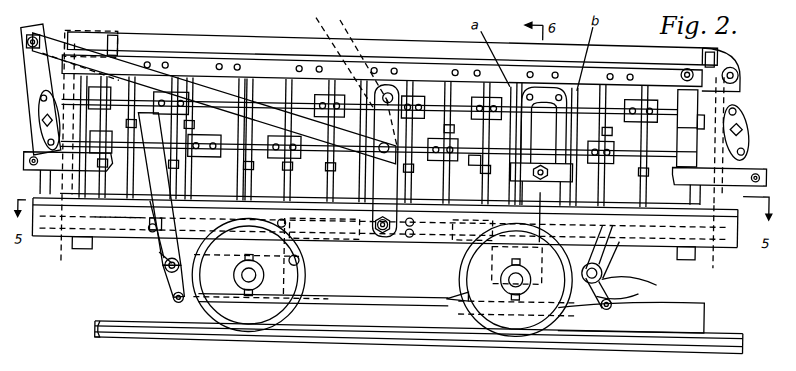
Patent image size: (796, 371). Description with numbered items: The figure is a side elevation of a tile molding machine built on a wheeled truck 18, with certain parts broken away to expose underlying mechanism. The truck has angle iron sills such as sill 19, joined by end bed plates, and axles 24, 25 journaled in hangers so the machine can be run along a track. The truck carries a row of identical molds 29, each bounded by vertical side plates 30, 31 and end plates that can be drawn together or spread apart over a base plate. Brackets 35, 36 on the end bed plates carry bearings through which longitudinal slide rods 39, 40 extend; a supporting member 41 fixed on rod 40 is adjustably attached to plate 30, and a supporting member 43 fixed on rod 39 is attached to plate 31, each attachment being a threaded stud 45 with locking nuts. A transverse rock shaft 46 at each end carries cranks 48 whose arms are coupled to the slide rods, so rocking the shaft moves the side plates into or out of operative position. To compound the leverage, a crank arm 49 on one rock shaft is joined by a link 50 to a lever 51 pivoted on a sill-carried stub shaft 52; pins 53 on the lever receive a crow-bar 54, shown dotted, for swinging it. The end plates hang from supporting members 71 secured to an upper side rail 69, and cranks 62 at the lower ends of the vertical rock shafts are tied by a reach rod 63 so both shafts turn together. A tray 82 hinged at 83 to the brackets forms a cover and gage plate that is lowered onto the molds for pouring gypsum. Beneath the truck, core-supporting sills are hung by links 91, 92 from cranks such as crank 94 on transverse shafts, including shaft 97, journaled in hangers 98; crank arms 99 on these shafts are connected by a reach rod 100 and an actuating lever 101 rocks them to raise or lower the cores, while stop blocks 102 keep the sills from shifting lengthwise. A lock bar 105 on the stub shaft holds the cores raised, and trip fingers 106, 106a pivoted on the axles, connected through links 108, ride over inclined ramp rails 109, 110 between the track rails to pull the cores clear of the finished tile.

The truck 18 is at (152, 37).
The angle iron sill 19 is at (107, 233).
The axle 24 is at (257, 290).
The axle 25 is at (523, 287).
The mold 29 is at (233, 91).
The vertical side plate 30 is at (519, 88).
The vertical side plate 31 is at (566, 83).
The bracket 35 is at (80, 206).
The bracket 36 is at (697, 103).
The slide rod 39 is at (448, 142).
The slide rod 40 is at (470, 160).
The supporting member 41 is at (441, 130).
The supporting member 43 is at (290, 102).
The threaded stud 45 is at (604, 266).
The transverse rock shaft 46 is at (40, 128).
The crank 48 is at (743, 143).
The crank arm 49 is at (37, 49).
The link 50 is at (173, 87).
The lever 51 is at (400, 60).
The stub shaft 52 is at (385, 231).
The pin 53 is at (385, 93).
The crow-bar 54 is at (333, 31).
The crank 62 is at (391, 239).
The reach rod 63 is at (455, 231).
The upper side rail 69 is at (430, 64).
The supporting member 71 is at (538, 128).
The tray 82 is at (602, 52).
The hinge 83 is at (108, 40).
The link 91 is at (146, 229).
The link 92 is at (618, 238).
The crank 94 is at (165, 257).
The transverse shaft 97 is at (626, 292).
The hanger 98 is at (160, 256).
The crank arm 99 is at (175, 296).
The reach rod 100 is at (337, 282).
The actuating lever 101 is at (168, 194).
The stop block 102 is at (85, 252).
The lock bar 105 is at (316, 241).
The trip finger 106 is at (162, 325).
The trip finger 106a is at (472, 300).
The link 108 is at (302, 265).
The inclined ramp rail 109 is at (419, 331).
The inclined ramp rail 110 is at (631, 317).